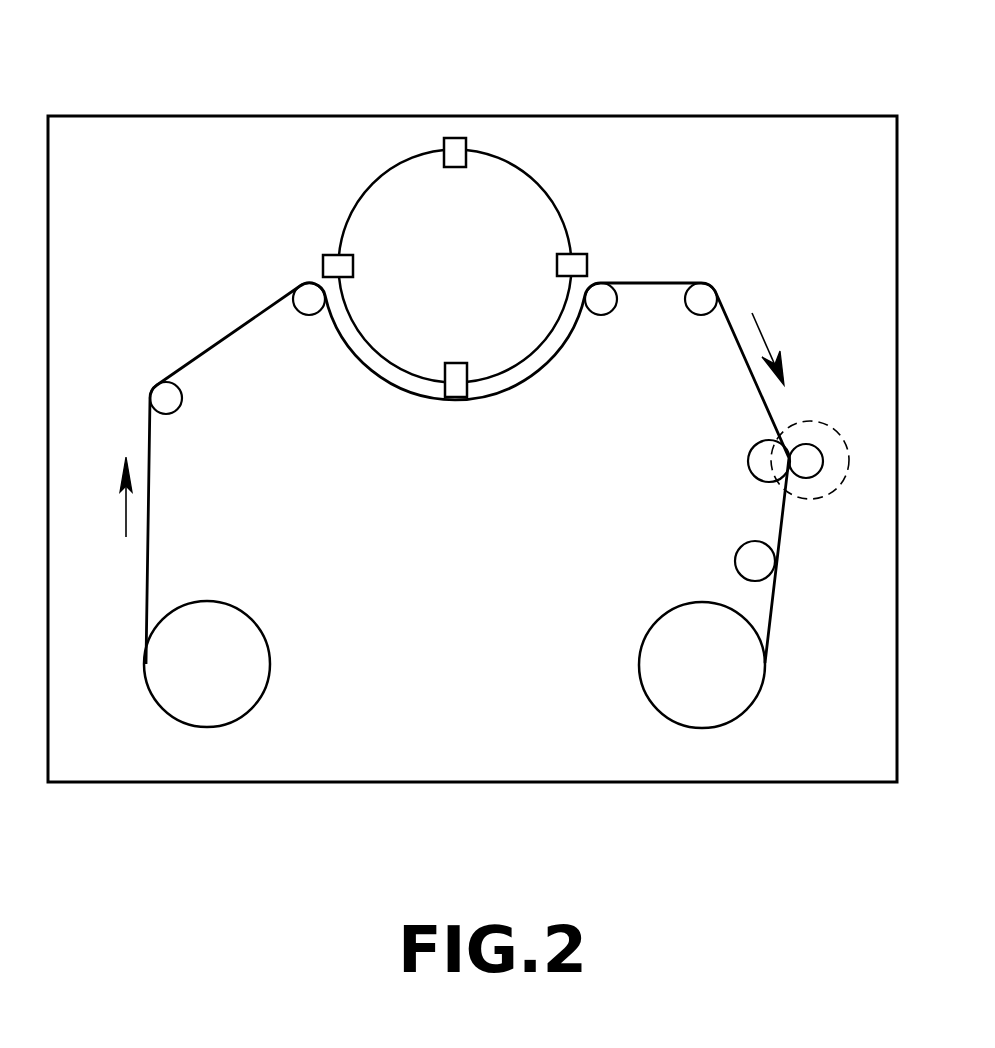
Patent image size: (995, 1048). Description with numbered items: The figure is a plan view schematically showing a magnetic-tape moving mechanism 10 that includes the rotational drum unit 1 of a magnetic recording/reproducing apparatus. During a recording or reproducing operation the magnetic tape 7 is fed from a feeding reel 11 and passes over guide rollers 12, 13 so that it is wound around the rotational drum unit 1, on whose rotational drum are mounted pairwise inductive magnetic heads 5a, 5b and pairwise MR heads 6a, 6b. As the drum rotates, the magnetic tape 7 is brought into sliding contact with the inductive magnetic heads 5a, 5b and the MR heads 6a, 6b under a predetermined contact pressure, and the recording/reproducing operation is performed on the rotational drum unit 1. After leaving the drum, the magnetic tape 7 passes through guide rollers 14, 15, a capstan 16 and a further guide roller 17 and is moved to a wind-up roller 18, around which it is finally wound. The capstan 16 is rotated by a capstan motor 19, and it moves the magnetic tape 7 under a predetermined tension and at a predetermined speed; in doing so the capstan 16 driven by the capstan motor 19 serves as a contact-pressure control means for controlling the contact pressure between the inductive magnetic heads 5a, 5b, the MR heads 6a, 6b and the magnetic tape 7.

The magnetic-tape moving mechanism 10 is at (650, 110).
The rotational drum unit 1 is at (578, 222).
The magnetic tape 7 is at (665, 280).
The MR head 6a is at (455, 150).
The MR head 6b is at (457, 385).
The inductive magnetic head 5a is at (575, 266).
The inductive magnetic head 5b is at (335, 264).
The feeding reel 11 is at (214, 630).
The guide roller 12 is at (174, 402).
The guide roller 13 is at (302, 305).
The guide roller 14 is at (603, 307).
The guide roller 15 is at (702, 305).
The capstan 16 is at (810, 457).
The guide roller 17 is at (748, 559).
The wind-up roller 18 is at (728, 688).
The capstan motor 19 is at (805, 503).